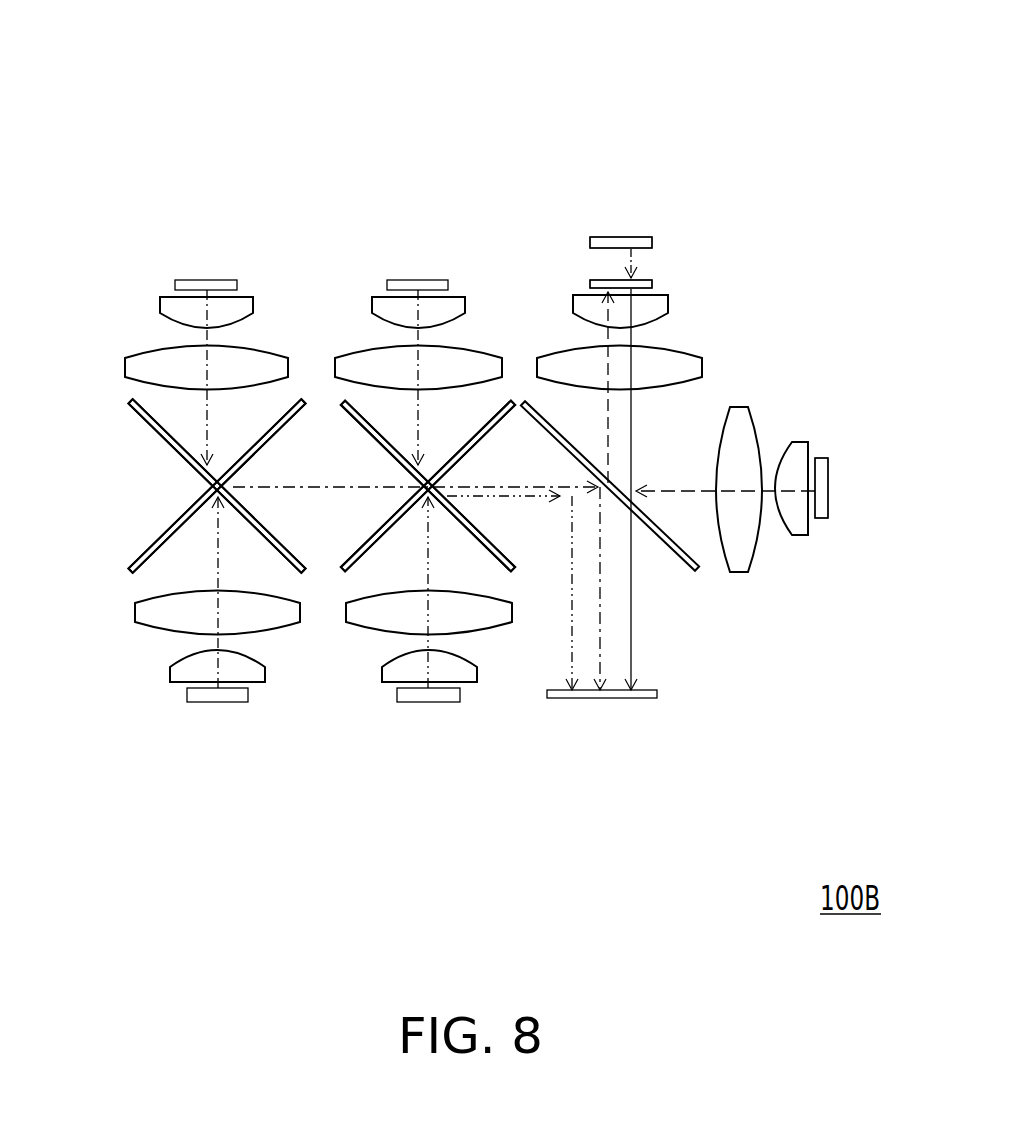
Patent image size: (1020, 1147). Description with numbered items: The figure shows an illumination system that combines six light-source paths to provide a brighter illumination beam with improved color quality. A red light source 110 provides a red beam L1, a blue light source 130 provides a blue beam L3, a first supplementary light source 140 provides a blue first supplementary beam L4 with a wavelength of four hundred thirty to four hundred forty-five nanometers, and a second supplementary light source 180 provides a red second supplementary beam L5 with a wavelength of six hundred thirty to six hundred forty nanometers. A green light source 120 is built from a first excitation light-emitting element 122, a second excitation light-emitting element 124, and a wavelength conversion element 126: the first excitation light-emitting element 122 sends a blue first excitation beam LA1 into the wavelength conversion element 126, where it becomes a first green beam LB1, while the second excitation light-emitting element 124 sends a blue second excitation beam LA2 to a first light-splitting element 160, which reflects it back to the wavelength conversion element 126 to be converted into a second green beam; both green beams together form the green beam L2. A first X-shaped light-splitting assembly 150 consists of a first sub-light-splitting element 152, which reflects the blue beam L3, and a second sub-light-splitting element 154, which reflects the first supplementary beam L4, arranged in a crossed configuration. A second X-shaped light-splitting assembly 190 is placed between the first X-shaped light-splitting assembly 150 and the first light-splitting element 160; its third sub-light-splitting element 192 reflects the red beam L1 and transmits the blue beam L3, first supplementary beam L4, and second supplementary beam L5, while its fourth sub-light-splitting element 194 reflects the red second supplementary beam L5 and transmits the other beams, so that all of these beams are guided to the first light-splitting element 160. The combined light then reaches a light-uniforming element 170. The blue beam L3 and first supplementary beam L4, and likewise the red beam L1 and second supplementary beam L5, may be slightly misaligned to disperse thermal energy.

The red light source 110 is at (428, 278).
The green light source 120 is at (141, 3).
The first excitation light-emitting element 122 is at (610, 236).
The second excitation light-emitting element 124 is at (830, 472).
The wavelength conversion element 126 is at (655, 285).
The blue light source 130 is at (217, 278).
The first supplementary light source 140 is at (230, 703).
The first X-shaped light-splitting assembly 150 is at (441, 3).
The first sub-light-splitting element 152 is at (128, 400).
The second sub-light-splitting element 154 is at (133, 568).
The first light-splitting element 160 is at (683, 568).
The light-uniforming element 170 is at (650, 700).
The second supplementary light source 180 is at (438, 703).
The second X-shaped light-splitting assembly 190 is at (583, 3).
The third sub-light-splitting element 192 is at (512, 568).
The fourth sub-light-splitting element 194 is at (345, 567).
The red beam L1 is at (410, 335).
The green beam L2 is at (288, 3).
The blue beam L3 is at (200, 335).
The first supplementary beam L4 is at (215, 642).
The second supplementary beam L5 is at (425, 643).
The first excitation beam LA1 is at (630, 257).
The second excitation beam LA2 is at (765, 490).
The first green beam LB1 is at (635, 405).